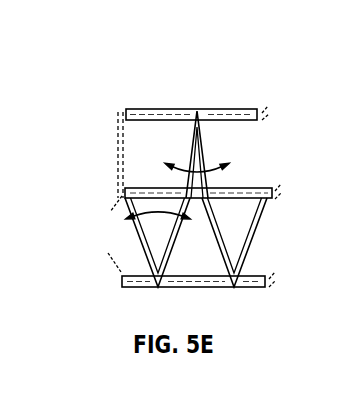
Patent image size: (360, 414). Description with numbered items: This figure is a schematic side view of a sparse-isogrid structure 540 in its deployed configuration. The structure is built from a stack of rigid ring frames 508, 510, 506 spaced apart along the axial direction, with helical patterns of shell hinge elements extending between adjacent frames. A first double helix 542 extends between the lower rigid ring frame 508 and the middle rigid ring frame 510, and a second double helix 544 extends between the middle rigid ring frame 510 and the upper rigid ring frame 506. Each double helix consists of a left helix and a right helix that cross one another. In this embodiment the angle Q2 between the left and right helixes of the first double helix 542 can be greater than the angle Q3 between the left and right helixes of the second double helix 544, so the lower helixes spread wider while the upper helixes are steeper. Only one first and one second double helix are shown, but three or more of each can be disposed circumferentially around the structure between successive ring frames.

The sparse-isogrid structure 540 is at (200, 95).
The rigid ring frame 506 is at (147, 118).
The rigid ring frame 510 is at (122, 195).
The rigid ring frame 508 is at (119, 277).
The second double helix 544 is at (233, 125).
The first double helix 542 is at (283, 205).
The angle between left and right helixes of second double helix Q3 is at (188, 157).
The angle between left and right helixes of first double helix Q2 is at (158, 226).